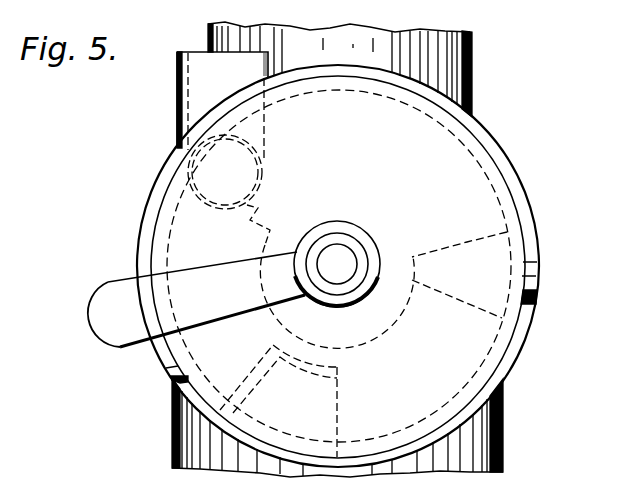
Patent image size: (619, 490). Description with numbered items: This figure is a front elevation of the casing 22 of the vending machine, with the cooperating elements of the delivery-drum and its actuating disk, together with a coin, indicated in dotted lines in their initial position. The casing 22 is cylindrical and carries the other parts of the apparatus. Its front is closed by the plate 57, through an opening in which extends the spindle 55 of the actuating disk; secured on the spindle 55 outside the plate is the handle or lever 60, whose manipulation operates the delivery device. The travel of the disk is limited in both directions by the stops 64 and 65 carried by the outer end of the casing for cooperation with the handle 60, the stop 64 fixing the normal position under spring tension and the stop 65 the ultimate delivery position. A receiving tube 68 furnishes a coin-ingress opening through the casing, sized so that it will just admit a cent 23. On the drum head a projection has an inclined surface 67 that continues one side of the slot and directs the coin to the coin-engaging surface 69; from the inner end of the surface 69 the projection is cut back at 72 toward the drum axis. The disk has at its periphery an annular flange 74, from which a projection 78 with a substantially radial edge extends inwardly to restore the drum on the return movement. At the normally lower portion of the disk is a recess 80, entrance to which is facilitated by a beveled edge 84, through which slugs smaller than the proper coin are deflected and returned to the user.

The casing 22 is at (514, 180).
The cent 23 is at (192, 178).
The spindle 55 is at (340, 257).
The plate 57 is at (502, 352).
The handle or lever 60 is at (105, 284).
The stop 64 is at (160, 353).
The stop 65 is at (540, 281).
The surface 67 is at (265, 131).
The receiving tube 68 is at (177, 88).
The coin-engaging surface 69 is at (265, 207).
The cut-back portion 72 is at (250, 226).
The annular flange 74 is at (484, 139).
The projection 78 is at (467, 242).
The recess 80 is at (323, 410).
The beveled edge 84 is at (268, 361).